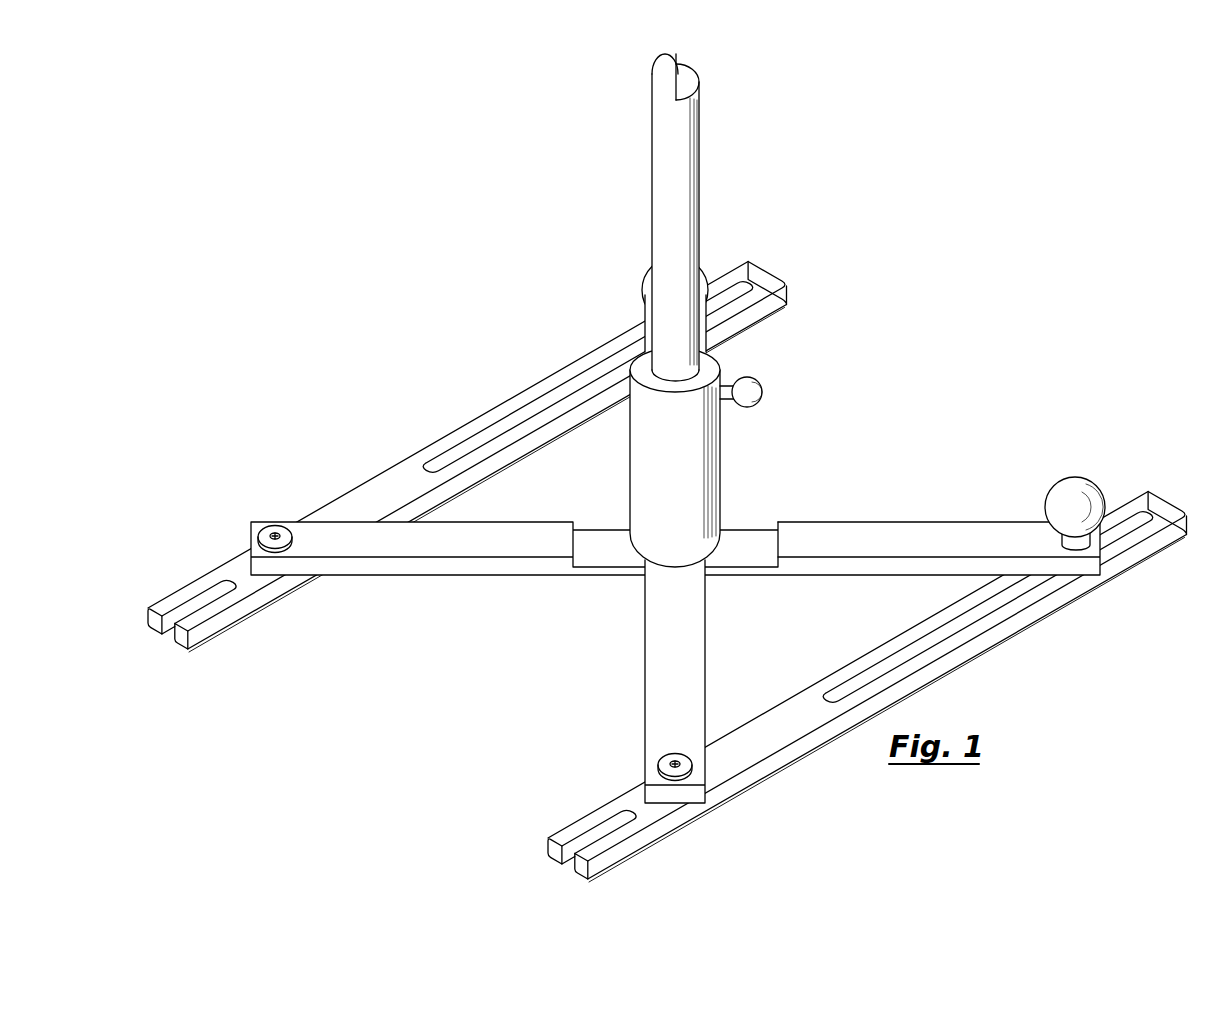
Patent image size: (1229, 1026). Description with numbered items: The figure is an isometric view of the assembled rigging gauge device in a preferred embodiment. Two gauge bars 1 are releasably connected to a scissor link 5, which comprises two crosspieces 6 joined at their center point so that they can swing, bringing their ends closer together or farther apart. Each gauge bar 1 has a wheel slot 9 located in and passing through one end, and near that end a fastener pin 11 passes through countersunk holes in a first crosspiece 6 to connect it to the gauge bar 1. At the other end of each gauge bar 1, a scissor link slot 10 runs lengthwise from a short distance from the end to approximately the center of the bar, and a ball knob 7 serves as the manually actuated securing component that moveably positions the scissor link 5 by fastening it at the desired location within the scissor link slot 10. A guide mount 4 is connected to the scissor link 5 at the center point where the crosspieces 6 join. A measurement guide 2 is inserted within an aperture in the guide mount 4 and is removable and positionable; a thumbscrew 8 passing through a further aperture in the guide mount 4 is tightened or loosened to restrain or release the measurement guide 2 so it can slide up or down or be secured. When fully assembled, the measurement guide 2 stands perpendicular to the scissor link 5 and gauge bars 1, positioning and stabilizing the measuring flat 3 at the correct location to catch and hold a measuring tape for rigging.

The gauge bar 1 is at (383, 484).
The measurement guide 2 is at (661, 147).
The measuring flat 3 is at (680, 58).
The guide mount 4 is at (722, 465).
The scissor link 5 is at (641, 748).
The crosspiece 6 is at (915, 520).
The ball knob 7 is at (1090, 487).
The thumbscrew 8 is at (760, 390).
The wheel slot 9 is at (173, 623).
The scissor link slot 10 is at (977, 618).
The fastener pin 11 is at (257, 535).